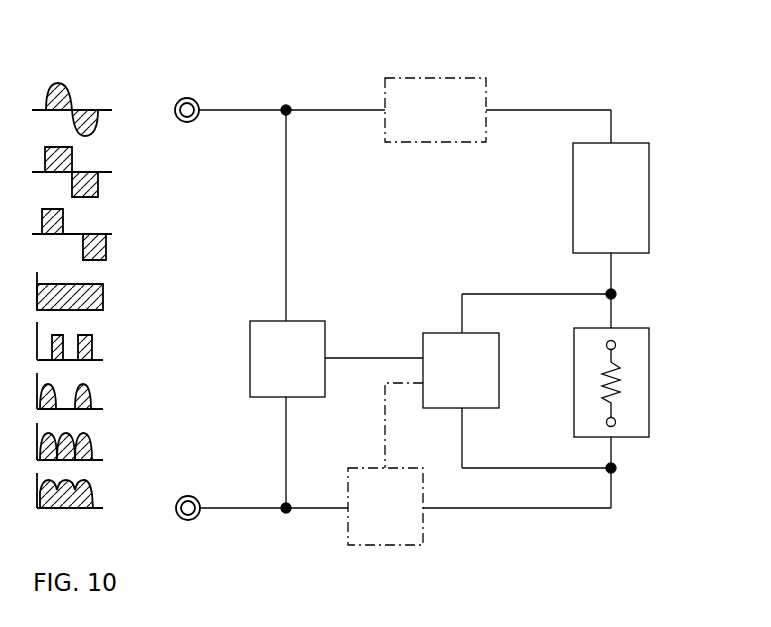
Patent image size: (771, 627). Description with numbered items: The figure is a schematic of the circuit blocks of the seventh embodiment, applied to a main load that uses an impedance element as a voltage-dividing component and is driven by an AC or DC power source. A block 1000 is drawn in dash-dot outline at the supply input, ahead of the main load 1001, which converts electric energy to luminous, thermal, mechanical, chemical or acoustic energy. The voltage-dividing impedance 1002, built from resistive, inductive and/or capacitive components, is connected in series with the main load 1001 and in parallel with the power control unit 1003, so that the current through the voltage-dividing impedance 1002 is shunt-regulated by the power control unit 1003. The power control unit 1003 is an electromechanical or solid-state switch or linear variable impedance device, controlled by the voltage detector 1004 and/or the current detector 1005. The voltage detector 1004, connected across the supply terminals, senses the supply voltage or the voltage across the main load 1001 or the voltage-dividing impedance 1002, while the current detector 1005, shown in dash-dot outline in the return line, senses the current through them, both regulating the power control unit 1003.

The power conversion / rectifier block (dash-dot, optional) 1000 is at (435, 78).
The main load 1001 is at (649, 206).
The voltage-dividing impedance 1002 is at (649, 392).
The power control unit 1003 is at (461, 370).
The voltage detector 1004 is at (287, 359).
The current detector 1005 is at (385, 506).